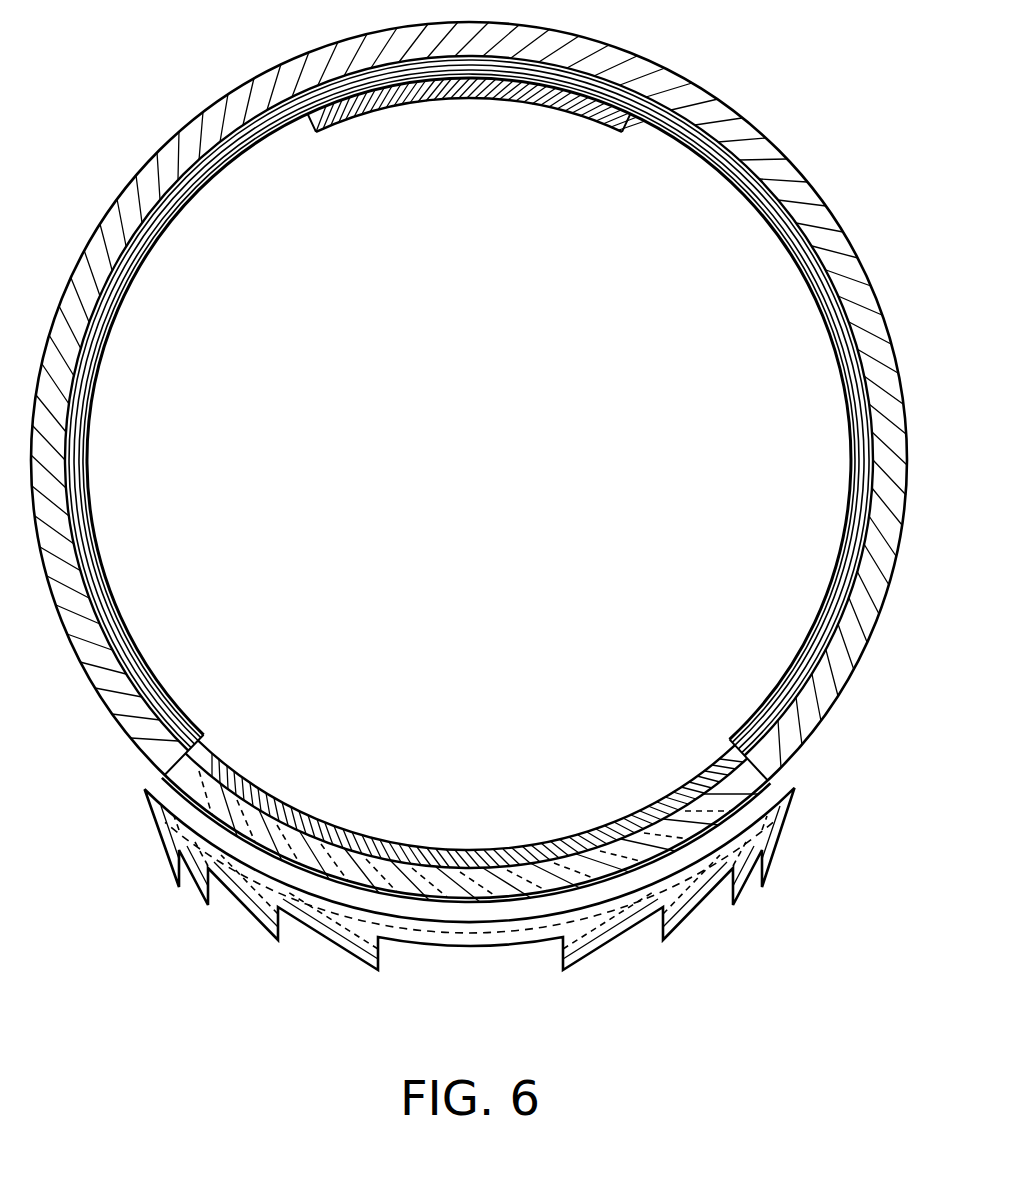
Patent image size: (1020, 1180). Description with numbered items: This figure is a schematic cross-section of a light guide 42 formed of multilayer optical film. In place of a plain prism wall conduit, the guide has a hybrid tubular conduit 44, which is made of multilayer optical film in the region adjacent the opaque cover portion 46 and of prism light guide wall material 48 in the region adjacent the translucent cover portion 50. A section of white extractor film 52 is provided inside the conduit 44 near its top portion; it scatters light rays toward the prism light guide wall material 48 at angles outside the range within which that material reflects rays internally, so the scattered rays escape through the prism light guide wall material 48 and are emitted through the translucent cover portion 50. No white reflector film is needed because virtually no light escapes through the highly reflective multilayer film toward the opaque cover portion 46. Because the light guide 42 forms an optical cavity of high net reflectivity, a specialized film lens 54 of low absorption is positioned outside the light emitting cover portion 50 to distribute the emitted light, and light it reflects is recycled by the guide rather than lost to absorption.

The light guide 42 is at (790, 90).
The hybrid tubular conduit 44 is at (122, 300).
The opaque cover portion 46 is at (196, 121).
The prism light guide wall material 48 is at (560, 840).
The translucent cover portion 50 is at (486, 905).
The white extractor film 52 is at (493, 100).
The film lens 54 is at (612, 936).